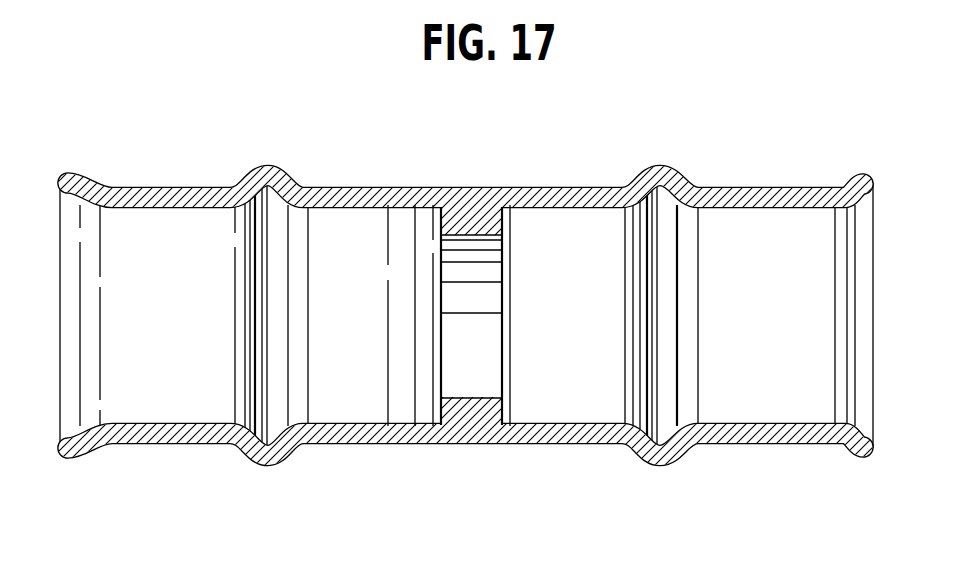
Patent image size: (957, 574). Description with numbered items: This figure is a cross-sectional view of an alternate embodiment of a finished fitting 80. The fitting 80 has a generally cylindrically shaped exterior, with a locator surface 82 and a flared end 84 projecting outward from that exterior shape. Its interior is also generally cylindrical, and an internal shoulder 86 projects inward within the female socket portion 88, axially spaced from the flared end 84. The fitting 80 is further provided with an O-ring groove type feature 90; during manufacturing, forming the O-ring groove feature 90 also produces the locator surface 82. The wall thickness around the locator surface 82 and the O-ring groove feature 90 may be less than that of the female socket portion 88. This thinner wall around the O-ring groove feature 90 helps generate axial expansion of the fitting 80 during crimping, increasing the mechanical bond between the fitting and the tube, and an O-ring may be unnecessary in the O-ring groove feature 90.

The fitting 80 is at (157, 191).
The locator surface 82 is at (658, 167).
The flared end 84 is at (866, 173).
The internal shoulder 86 is at (470, 218).
The female socket portion 88 is at (793, 208).
The O-ring groove feature 90 is at (662, 186).